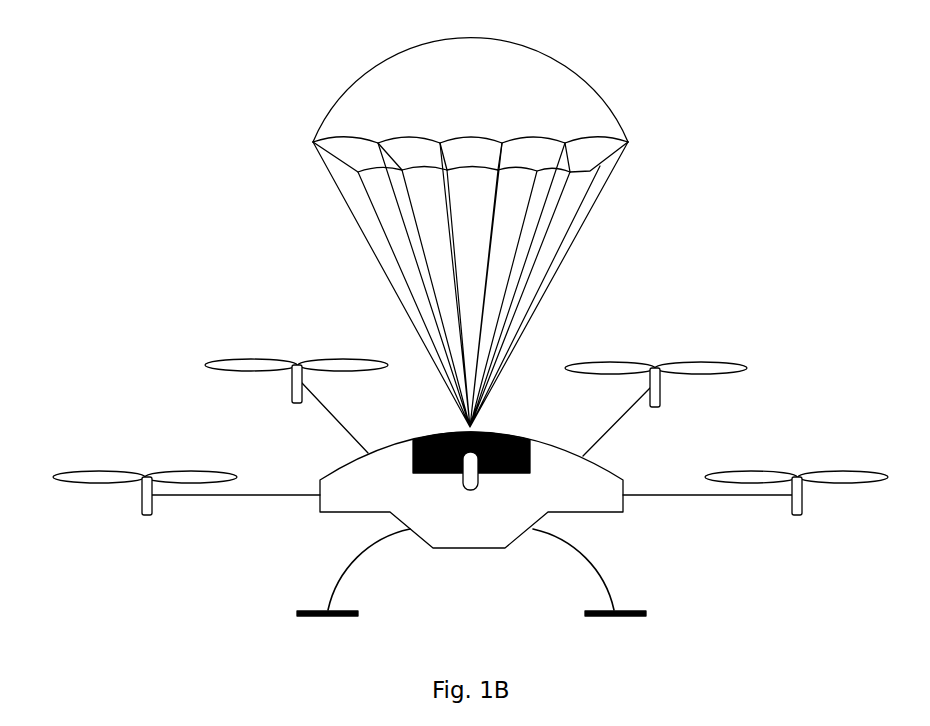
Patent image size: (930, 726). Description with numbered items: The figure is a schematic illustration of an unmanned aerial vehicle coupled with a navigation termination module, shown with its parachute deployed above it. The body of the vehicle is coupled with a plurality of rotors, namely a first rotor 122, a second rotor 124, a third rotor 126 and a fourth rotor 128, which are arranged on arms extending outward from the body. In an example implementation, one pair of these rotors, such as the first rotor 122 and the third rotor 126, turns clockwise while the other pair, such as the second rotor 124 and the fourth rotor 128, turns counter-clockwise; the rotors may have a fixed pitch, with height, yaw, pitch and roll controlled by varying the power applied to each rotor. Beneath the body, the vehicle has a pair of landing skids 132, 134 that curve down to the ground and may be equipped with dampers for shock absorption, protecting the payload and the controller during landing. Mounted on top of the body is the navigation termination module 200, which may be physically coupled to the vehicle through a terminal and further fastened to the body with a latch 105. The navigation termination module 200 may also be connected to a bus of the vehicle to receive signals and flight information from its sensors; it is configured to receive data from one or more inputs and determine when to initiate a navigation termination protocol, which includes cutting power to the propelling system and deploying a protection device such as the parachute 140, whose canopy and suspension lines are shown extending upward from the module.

The latch 105 is at (477, 487).
The first rotor 122 is at (142, 507).
The second rotor 124 is at (292, 391).
The third rotor 126 is at (660, 397).
The fourth rotor 128 is at (802, 507).
The landing skid 132 is at (345, 576).
The landing skid 134 is at (599, 575).
The parachute 140 is at (603, 100).
The navigation termination module 200 is at (503, 432).